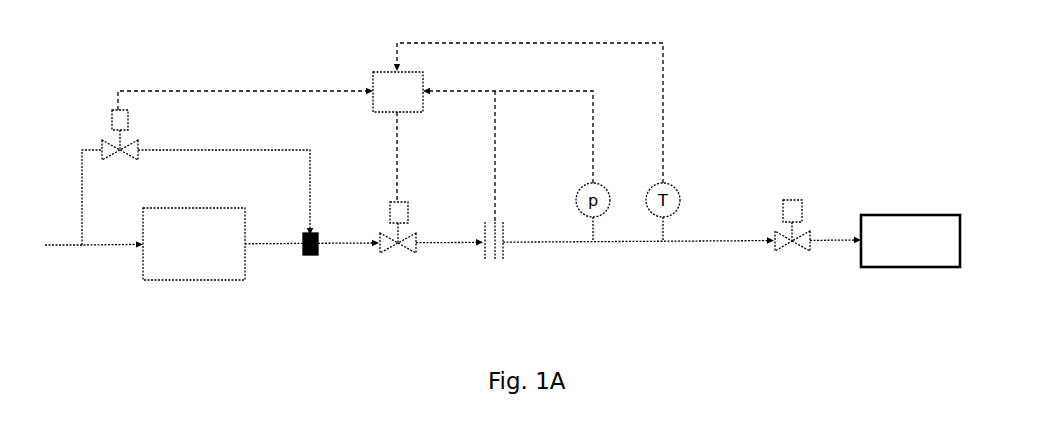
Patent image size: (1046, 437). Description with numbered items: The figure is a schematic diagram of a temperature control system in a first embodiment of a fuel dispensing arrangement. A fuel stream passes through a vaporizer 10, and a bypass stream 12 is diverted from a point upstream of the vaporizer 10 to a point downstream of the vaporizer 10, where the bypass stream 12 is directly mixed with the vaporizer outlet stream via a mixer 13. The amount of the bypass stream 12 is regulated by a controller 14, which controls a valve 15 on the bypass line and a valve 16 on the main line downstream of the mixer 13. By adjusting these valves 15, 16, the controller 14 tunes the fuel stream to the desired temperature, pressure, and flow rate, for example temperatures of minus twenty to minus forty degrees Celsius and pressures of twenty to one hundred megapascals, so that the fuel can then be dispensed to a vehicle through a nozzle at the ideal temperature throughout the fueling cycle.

The vaporizer 10 is at (165, 285).
The bypass stream 12 is at (86, 137).
The mixer 13 is at (300, 264).
The controller 14 is at (365, 72).
The valve 15 is at (129, 106).
The valve 16 is at (414, 262).